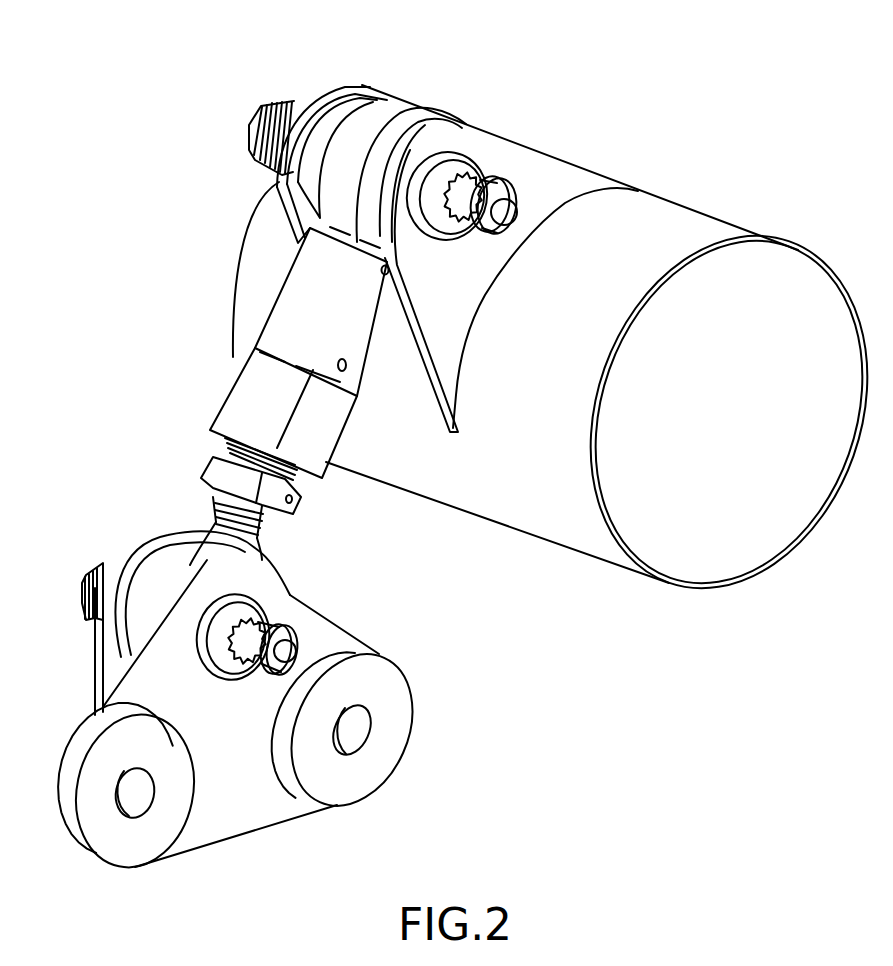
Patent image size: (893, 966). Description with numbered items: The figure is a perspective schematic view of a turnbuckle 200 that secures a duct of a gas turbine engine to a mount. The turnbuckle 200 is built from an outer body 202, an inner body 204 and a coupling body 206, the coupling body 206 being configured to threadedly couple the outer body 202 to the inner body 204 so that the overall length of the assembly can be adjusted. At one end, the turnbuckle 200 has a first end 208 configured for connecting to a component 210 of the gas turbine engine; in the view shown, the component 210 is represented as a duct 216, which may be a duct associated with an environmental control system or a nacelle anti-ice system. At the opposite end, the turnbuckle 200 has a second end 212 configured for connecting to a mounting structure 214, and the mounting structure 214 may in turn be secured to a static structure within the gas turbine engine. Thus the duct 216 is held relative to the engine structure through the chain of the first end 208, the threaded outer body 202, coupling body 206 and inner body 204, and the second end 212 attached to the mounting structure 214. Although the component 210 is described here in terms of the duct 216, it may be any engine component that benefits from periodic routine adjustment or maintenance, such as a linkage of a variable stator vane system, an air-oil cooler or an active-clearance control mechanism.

The turnbuckle 200 is at (196, 349).
The outer body 202 is at (309, 292).
The inner body 204 is at (205, 527).
The coupling body 206 is at (210, 460).
The first end 208 is at (380, 110).
The component 210 is at (668, 151).
The second end 212 is at (135, 591).
The mounting structure 214 is at (168, 683).
The duct 216 is at (690, 224).